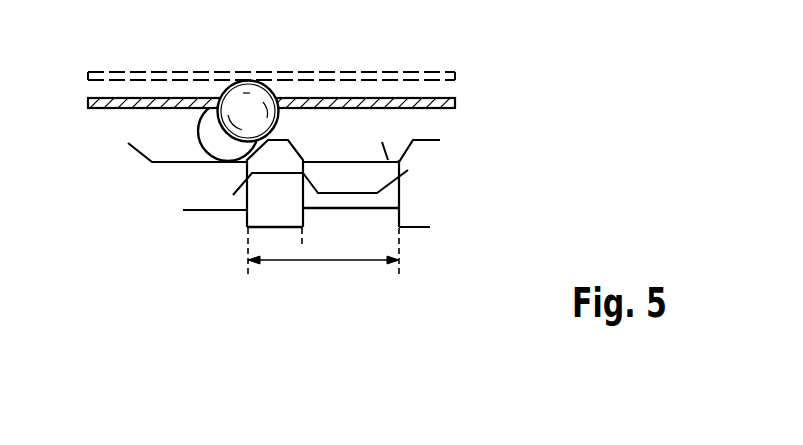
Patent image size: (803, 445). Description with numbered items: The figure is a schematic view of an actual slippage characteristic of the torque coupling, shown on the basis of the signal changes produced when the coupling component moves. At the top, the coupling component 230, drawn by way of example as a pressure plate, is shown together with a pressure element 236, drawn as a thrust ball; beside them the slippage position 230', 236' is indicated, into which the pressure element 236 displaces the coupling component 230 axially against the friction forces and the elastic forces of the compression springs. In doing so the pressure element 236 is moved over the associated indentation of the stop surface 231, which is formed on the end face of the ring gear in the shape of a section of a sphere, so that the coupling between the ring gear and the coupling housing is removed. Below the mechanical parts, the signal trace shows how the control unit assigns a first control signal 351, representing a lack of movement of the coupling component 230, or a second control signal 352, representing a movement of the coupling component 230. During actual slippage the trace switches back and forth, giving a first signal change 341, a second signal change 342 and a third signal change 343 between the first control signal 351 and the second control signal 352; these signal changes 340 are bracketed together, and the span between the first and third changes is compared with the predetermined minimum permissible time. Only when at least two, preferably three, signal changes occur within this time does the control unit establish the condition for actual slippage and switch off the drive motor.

The coupling component 230 is at (271, 64).
The slippage position of coupling component 230' is at (293, 50).
The stop surface 231 is at (388, 160).
The pressure element 236 is at (194, 91).
The slippage position of pressure element 236' is at (268, 81).
The signal changes 340 is at (392, 330).
The first signal change 341 is at (248, 272).
The second signal change 342 is at (302, 243).
The third signal change 343 is at (399, 272).
The first control signal 351 is at (187, 210).
The second control signal 352 is at (430, 227).